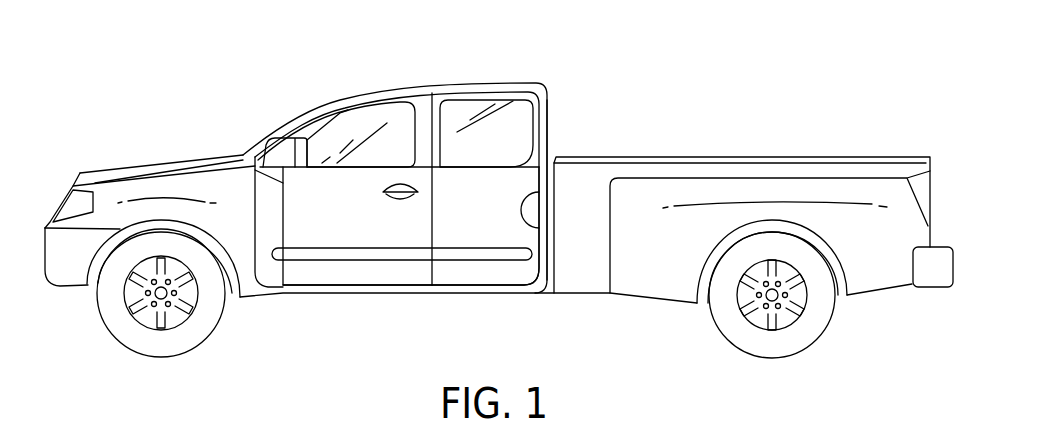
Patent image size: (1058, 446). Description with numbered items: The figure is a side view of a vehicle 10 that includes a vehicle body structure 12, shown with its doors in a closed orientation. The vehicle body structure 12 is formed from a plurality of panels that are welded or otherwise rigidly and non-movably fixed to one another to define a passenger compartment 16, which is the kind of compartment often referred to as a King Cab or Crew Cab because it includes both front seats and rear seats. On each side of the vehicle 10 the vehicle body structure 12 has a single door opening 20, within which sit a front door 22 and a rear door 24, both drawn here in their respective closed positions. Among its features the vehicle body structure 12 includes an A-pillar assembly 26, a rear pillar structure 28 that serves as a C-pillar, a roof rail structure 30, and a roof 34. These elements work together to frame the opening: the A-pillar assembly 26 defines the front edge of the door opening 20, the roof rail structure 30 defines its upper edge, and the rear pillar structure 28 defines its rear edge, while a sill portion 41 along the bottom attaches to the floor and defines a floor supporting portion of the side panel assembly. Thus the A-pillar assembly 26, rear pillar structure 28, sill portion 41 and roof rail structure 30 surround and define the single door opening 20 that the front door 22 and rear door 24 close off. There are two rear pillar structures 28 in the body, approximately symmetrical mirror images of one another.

The vehicle 10 is at (517, 63).
The vehicle body structure 12 is at (372, 84).
The passenger compartment 16 is at (505, 121).
The door opening 20 is at (527, 200).
The front door 22 is at (332, 228).
The rear door 24 is at (483, 222).
The A-pillar assembly 26 is at (330, 108).
The rear pillar structure 28 is at (549, 143).
The roof rail structure 30 is at (424, 91).
The roof 34 is at (472, 84).
The sill portion 41 is at (380, 287).